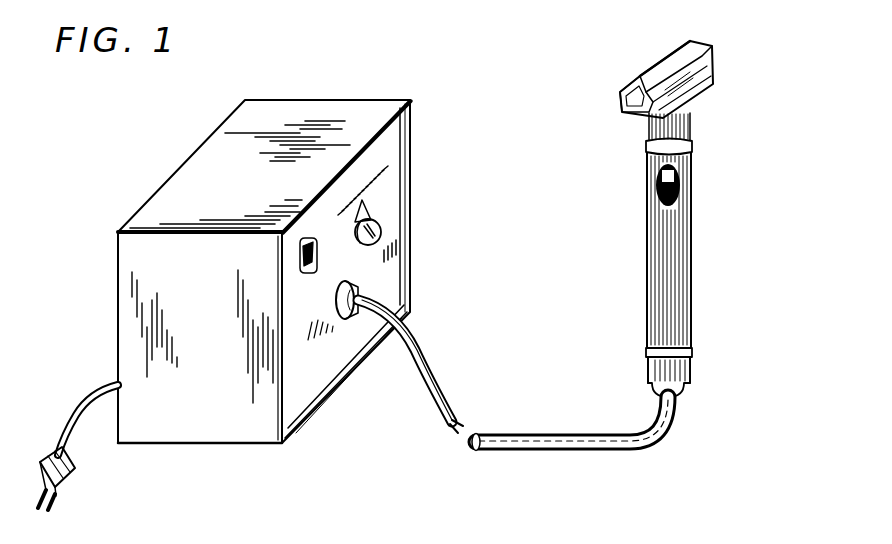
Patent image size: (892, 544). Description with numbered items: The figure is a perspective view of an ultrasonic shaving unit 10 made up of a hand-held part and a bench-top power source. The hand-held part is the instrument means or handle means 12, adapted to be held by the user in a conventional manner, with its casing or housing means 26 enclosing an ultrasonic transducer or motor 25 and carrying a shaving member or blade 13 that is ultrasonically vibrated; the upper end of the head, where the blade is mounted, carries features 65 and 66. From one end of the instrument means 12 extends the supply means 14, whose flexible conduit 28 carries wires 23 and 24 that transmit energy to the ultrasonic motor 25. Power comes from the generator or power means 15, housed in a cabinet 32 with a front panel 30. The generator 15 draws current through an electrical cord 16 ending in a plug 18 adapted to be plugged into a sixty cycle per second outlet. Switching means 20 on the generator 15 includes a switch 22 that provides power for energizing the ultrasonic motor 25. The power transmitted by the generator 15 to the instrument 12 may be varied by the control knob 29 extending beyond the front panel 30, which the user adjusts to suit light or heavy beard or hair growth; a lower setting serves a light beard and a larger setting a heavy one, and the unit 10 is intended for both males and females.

The shaving unit 10 is at (352, 97).
The instrument means 12 is at (692, 240).
The shaving member 13 is at (714, 85).
The supply means 14 is at (452, 338).
The generator 15 is at (412, 192).
The electrical cord 16 is at (76, 425).
The plug 18 is at (74, 470).
The switching means 20 is at (315, 216).
The switch 22 is at (312, 242).
The wire 23 is at (456, 420).
The wire 24 is at (447, 424).
The ultrasonic transducer 25 is at (683, 186).
The instrument casing 26 is at (690, 297).
The flexible conduit 28 is at (550, 443).
The control knob 29 is at (383, 234).
The front panel 30 is at (303, 368).
The cabinet 32 is at (257, 432).
The head top 65 is at (705, 45).
The light window 66 is at (640, 82).